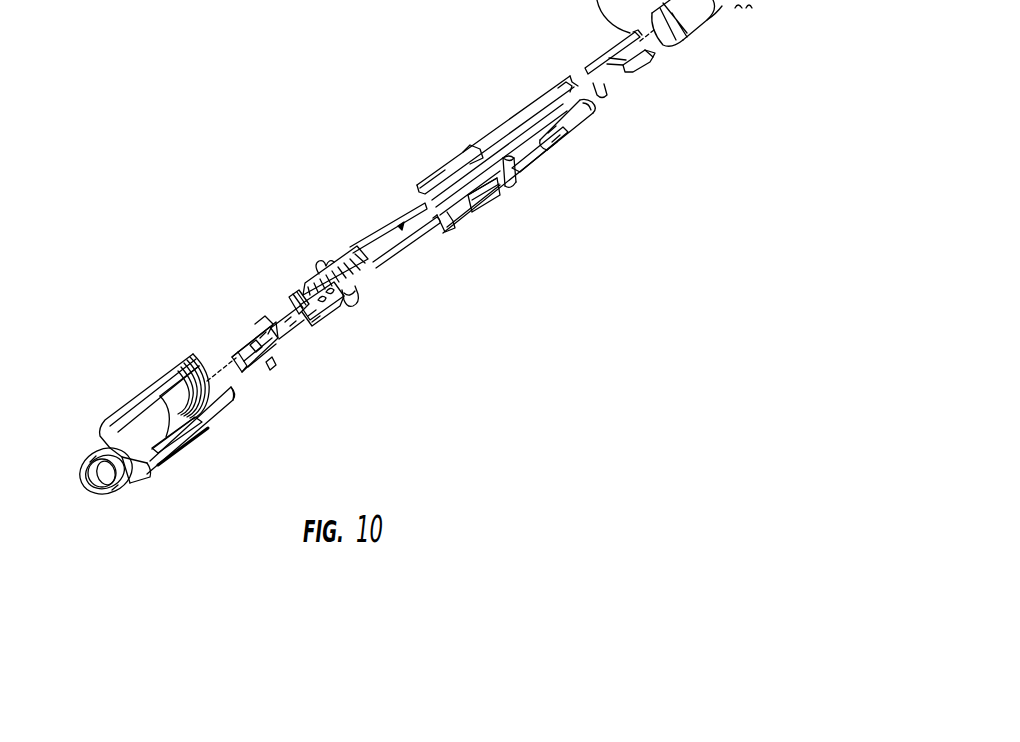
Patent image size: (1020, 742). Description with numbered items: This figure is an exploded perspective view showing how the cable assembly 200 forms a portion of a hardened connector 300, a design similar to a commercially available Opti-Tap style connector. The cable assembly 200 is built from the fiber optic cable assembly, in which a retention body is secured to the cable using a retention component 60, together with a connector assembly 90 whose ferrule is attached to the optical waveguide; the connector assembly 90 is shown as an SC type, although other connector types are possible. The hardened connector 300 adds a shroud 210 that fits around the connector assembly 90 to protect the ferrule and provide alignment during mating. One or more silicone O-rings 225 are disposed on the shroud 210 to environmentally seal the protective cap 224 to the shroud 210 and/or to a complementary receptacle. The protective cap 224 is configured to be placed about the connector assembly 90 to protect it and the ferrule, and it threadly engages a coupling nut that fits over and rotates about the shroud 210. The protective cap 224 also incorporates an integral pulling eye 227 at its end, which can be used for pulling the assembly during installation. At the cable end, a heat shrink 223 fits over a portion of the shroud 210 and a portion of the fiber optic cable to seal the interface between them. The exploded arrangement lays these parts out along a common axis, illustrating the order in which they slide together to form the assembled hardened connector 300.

The hardened connector 300 is at (226, 187).
The protective cap 224 is at (148, 475).
The integral pulling eye 227 is at (100, 494).
The cable assembly 200 is at (227, 368).
The retention component 60 is at (337, 309).
The O-ring 225 is at (356, 303).
The connector assembly 90 is at (267, 362).
The shroud 210 is at (450, 161).
The heat shrink 223 is at (685, 34).